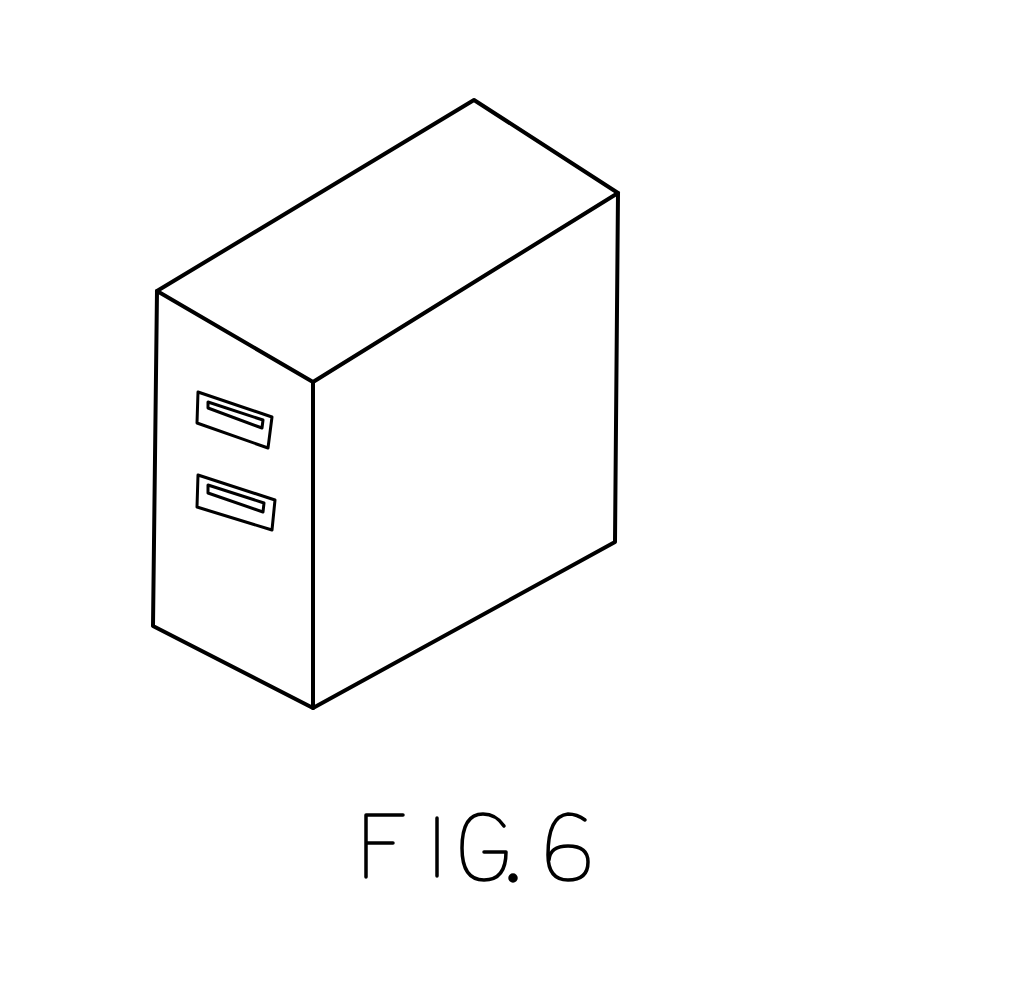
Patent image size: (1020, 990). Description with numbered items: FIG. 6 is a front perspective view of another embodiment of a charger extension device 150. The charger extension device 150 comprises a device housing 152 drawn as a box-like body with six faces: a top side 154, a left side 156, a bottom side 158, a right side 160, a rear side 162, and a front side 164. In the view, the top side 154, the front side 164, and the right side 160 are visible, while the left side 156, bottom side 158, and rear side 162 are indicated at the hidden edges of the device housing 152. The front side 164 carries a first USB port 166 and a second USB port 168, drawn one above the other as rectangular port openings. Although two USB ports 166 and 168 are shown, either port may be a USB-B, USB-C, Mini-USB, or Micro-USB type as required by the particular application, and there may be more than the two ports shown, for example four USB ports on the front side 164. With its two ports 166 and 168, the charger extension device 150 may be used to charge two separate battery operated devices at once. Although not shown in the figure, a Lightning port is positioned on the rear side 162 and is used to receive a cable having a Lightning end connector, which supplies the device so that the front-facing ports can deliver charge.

The charger extension device 150 is at (625, 114).
The device housing 152 is at (677, 519).
The top side 154 is at (335, 235).
The left side 156 is at (180, 258).
The bottom side 158 is at (472, 644).
The right side 160 is at (567, 397).
The rear side 162 is at (626, 277).
The front side 164 is at (178, 453).
The first USB port 166 is at (221, 388).
The second USB port 168 is at (221, 525).